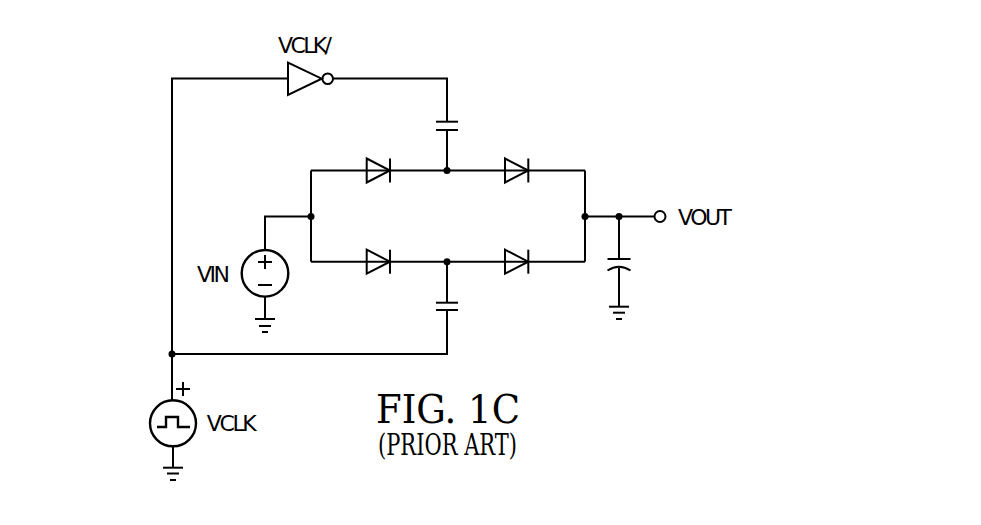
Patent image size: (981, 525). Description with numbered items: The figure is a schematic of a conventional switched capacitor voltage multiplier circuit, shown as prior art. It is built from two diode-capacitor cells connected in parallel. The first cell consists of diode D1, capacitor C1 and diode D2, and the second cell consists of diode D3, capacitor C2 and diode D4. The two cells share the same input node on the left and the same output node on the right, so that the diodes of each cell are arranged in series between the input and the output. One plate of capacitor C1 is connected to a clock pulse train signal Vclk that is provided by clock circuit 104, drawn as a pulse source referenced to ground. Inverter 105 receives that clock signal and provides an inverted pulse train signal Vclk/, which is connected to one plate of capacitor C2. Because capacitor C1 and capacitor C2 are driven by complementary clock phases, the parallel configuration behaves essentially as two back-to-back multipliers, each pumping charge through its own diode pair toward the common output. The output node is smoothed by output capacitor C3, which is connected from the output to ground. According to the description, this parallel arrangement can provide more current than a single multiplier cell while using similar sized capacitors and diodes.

The clock circuit 104 is at (151, 418).
The inverter 105 is at (309, 87).
The diode D1 is at (378, 248).
The diode D2 is at (516, 248).
The diode D3 is at (378, 156).
The diode D4 is at (515, 157).
The capacitor C1 is at (463, 309).
The capacitor C2 is at (464, 125).
The output capacitor C3 is at (636, 268).